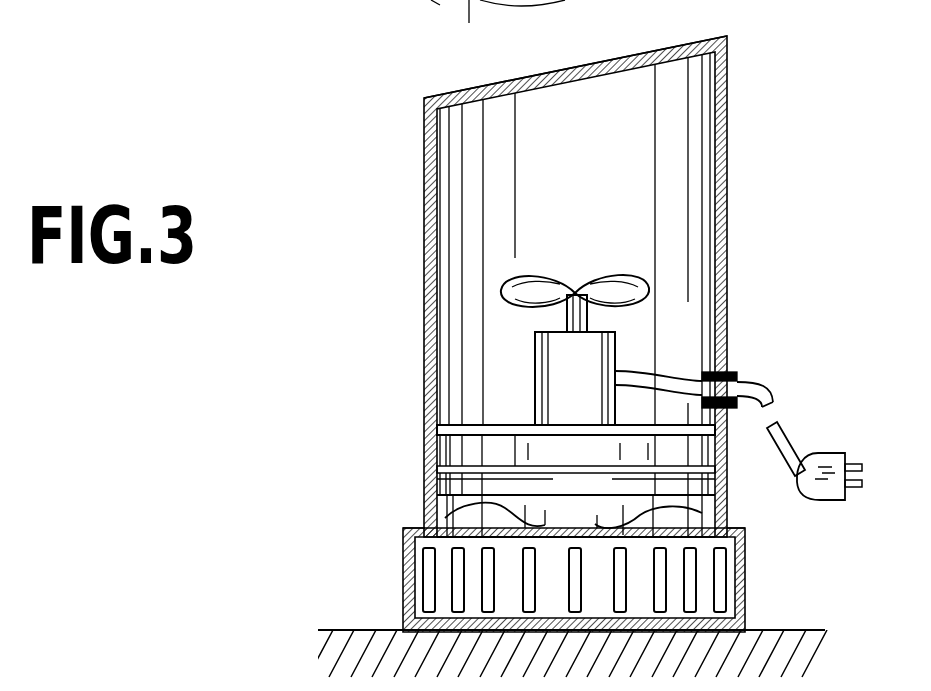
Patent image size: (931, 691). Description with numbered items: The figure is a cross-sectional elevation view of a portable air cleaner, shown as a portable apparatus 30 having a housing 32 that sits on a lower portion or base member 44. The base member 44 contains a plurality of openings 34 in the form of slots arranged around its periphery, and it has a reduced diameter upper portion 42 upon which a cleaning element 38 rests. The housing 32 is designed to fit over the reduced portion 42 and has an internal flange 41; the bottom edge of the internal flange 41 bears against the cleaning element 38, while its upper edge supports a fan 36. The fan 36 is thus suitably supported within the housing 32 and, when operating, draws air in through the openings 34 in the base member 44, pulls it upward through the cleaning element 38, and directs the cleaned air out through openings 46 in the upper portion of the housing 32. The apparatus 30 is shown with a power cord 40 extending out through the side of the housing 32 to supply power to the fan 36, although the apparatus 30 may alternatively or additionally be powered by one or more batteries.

The portable apparatus 30 is at (743, 130).
The housing 32 is at (727, 278).
The openings 34 is at (403, 586).
The fan 36 is at (616, 358).
The cleaning element 38 is at (612, 489).
The power cord 40 is at (790, 439).
The internal flange 41 is at (425, 441).
The reduced diameter upper portion 42 is at (573, 520).
The base member 44 is at (403, 537).
The openings 46 is at (597, 62).